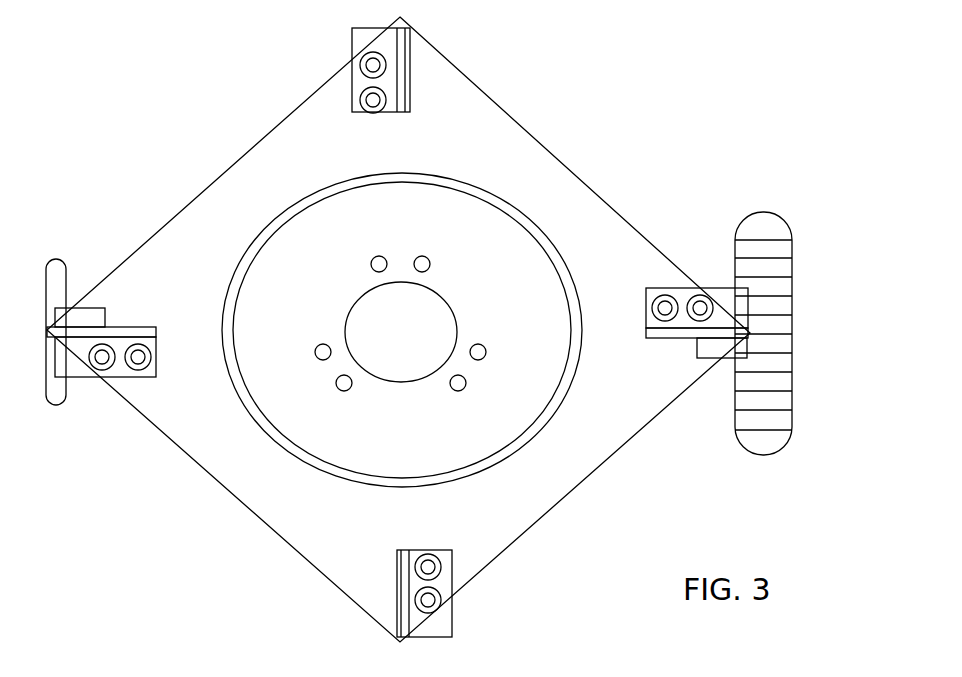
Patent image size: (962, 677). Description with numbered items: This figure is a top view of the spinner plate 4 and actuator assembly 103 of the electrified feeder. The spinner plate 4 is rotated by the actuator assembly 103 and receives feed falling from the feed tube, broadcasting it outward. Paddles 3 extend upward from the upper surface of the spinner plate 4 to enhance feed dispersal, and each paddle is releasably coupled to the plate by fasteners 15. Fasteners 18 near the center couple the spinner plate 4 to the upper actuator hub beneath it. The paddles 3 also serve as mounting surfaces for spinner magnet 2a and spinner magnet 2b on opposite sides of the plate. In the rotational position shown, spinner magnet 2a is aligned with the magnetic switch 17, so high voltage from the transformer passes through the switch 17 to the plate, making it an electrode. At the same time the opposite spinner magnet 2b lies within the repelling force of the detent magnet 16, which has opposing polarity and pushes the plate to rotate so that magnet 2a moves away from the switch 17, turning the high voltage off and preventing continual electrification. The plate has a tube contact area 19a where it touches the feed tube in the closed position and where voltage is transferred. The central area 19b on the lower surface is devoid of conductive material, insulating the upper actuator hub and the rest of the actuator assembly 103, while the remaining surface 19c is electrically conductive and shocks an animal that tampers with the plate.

The actuator assembly 103 is at (205, 60).
The spinner plate 4 is at (568, 164).
The paddles 3 is at (399, 116).
The fasteners 15 is at (372, 104).
The magnetic switch 17 is at (59, 246).
The detent magnet 16 is at (768, 433).
The spinner magnet 2a is at (113, 297).
The spinner magnet 2b is at (699, 359).
The fasteners 18 is at (427, 270).
The tube contact area 19a is at (244, 269).
The central area 19b is at (420, 440).
The spinner plate surface 19c is at (356, 516).